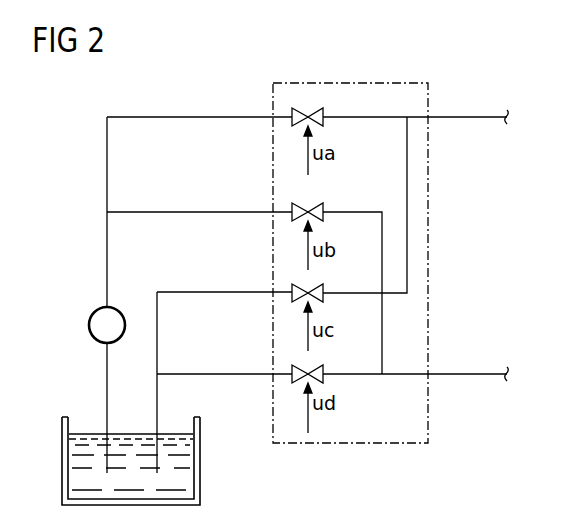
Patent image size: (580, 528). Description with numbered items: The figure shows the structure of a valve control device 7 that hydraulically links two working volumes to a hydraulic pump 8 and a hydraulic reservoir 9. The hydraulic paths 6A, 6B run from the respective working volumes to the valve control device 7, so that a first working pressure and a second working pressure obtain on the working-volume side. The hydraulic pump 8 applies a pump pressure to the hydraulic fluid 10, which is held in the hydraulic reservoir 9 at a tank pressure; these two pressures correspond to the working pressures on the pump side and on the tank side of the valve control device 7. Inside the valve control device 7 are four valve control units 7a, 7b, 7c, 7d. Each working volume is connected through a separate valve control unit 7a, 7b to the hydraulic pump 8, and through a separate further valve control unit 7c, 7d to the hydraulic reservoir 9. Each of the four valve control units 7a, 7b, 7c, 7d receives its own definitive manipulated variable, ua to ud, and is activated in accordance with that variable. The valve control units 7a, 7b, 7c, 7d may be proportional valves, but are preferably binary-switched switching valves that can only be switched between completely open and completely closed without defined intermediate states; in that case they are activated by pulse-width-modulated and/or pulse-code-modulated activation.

The hydraulic path 6A is at (478, 116).
The hydraulic path 6B is at (478, 373).
The valve control device 7 is at (385, 444).
The valve control unit 7a is at (300, 108).
The valve control unit 7b is at (296, 203).
The valve control unit 7c is at (296, 283).
The valve control unit 7d is at (296, 365).
The hydraulic pump 8 is at (89, 326).
The hydraulic reservoir 9 is at (200, 481).
The hydraulic fluid 10 is at (190, 461).